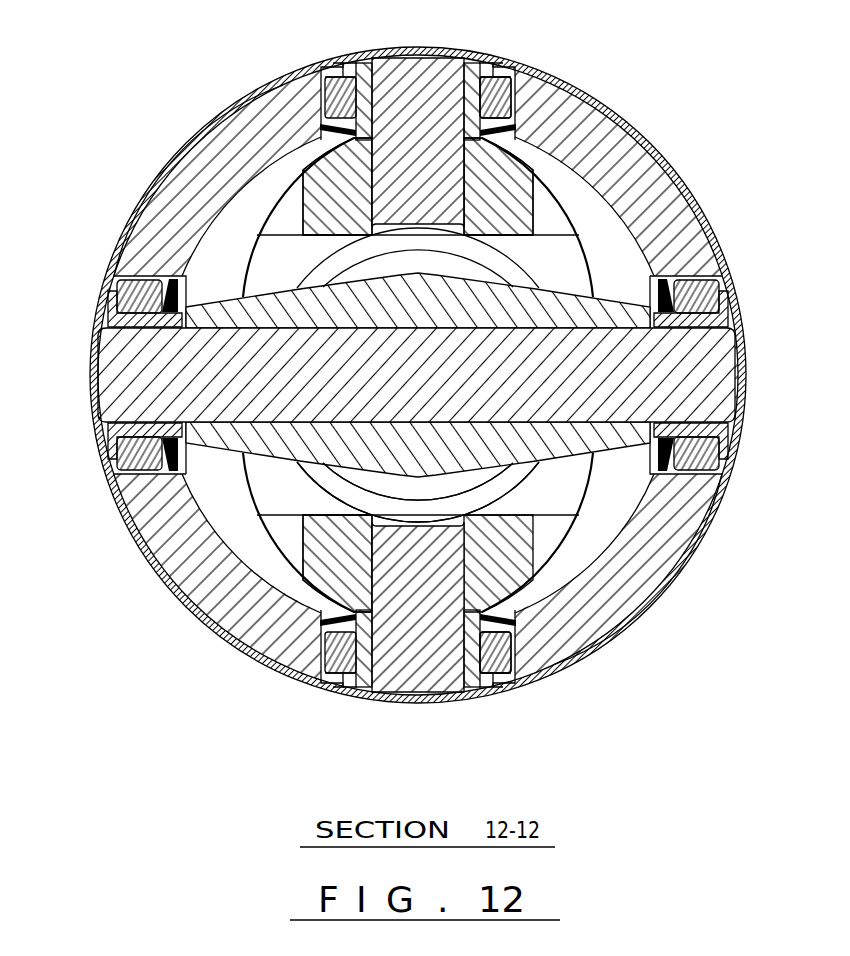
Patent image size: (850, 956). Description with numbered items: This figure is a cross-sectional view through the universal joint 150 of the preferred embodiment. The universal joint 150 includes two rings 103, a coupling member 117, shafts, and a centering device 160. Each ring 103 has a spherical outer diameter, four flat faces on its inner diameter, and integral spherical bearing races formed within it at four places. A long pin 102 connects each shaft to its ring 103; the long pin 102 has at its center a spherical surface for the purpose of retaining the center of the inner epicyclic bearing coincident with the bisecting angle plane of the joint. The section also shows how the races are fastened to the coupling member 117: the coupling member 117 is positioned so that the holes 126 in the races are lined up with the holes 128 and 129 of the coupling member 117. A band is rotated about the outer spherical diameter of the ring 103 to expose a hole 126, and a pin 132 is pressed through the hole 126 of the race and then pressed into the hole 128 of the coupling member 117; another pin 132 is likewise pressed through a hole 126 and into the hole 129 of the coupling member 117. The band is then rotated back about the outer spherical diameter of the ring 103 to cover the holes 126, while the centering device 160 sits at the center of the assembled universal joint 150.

The long pin 102 is at (698, 372).
The ring 103 is at (637, 578).
The coupling member 117 is at (503, 210).
The hole 126 is at (512, 124).
The hole 128 is at (315, 185).
The hole 129 is at (355, 573).
The pin 132 is at (442, 52).
The universal joint 150 is at (145, 645).
The centering device 160 is at (520, 480).